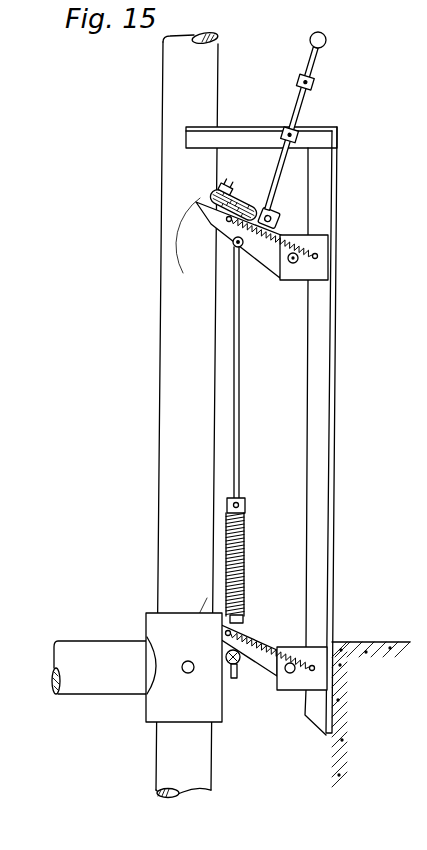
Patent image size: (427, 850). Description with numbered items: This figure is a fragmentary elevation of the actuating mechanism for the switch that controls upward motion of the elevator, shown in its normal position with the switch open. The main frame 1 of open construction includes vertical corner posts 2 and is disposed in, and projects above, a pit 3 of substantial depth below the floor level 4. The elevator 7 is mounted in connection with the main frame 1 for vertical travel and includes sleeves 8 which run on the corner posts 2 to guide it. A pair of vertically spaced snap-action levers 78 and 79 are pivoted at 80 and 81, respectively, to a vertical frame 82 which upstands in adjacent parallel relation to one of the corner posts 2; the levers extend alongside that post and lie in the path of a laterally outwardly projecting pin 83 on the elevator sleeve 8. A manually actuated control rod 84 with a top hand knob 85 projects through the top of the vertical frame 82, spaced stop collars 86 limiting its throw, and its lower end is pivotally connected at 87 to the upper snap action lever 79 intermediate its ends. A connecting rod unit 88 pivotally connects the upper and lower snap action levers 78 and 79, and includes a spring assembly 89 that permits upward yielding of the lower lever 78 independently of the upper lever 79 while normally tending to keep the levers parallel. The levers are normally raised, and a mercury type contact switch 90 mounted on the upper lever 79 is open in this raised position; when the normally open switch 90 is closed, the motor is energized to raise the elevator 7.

The main frame 1 is at (157, 414).
The vertical corner post 2 is at (163, 381).
The pit 3 is at (310, 763).
The floor level 4 is at (370, 642).
The elevator 7 is at (93, 668).
The elevator sleeve 8 is at (165, 681).
The lower snap action lever 78 is at (251, 628).
The upper snap action lever 79 is at (265, 250).
The pivot 80 is at (288, 676).
The pivot 81 is at (292, 264).
The vertical frame 82 is at (332, 323).
The pin 83 is at (182, 663).
The control rod 84 is at (324, 121).
The hand knob 85 is at (327, 38).
The stop collar 86 is at (303, 126).
The pivotal connection 87 is at (273, 211).
The connecting rod unit 88 is at (243, 410).
The spring assembly 89 is at (246, 551).
The mercury type contact switch 90 is at (237, 196).